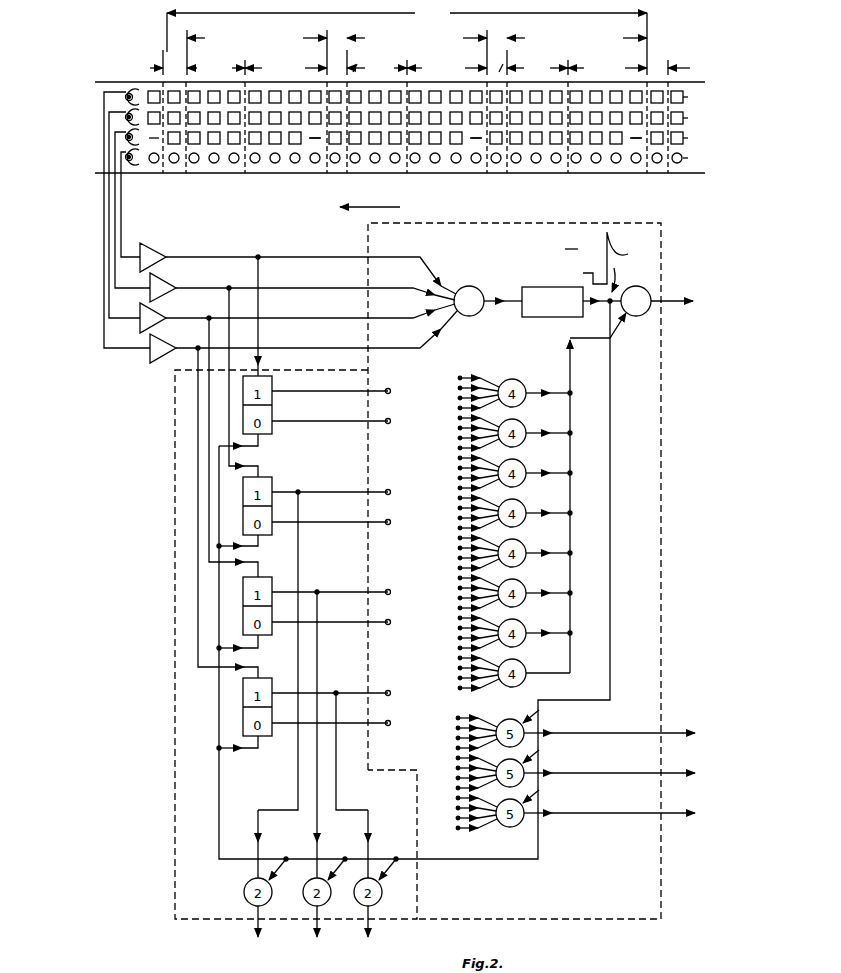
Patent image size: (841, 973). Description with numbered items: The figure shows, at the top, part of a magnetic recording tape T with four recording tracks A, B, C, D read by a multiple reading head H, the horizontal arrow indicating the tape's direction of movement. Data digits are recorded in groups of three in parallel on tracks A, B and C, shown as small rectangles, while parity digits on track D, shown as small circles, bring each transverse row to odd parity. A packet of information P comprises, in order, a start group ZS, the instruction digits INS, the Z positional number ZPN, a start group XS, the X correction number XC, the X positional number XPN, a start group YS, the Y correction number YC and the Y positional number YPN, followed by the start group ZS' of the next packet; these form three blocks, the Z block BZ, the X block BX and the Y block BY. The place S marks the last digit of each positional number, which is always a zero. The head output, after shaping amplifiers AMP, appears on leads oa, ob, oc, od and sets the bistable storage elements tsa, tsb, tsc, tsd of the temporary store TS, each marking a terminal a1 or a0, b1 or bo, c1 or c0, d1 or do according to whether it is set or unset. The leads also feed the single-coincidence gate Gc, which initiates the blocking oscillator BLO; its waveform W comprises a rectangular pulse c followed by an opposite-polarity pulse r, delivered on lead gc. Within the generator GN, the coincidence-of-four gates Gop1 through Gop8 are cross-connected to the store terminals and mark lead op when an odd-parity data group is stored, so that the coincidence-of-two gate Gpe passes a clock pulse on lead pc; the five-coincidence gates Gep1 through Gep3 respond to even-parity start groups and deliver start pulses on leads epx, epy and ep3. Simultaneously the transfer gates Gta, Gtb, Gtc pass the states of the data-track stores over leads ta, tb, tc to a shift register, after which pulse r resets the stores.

The magnetic recording tape T is at (113, 80).
The multiple reading head H is at (133, 80).
The recording track A is at (691, 97).
The recording track B is at (691, 118).
The recording track C is at (691, 138).
The parity track D is at (692, 158).
The last digit place of positional number S is at (316, 142).
The packet of information P is at (407, 41).
The Z block BZ is at (257, 47).
The X block BX is at (417, 47).
The Y block BY is at (577, 47).
The start group ZS is at (167, 61).
The instruction digits INS is at (216, 68).
The Z positional number ZPN is at (286, 68).
The start group XS is at (348, 60).
The X correction number XC is at (377, 68).
The X positional number XPN is at (447, 68).
The start group YS is at (512, 60).
The Y correction number YC is at (537, 68).
The Y positional number YPN is at (607, 68).
The start group of next packet ZS' is at (678, 60).
The shaping amplifiers AMP is at (165, 226).
The output lead od is at (221, 258).
The output lead oc is at (198, 289).
The output lead ob is at (178, 319).
The output lead oa is at (166, 349).
The single-coincidence gate Gc is at (488, 293).
The blocking oscillator BLO is at (566, 302).
The coincidence-of-two gate Gpe is at (629, 292).
The clock signal output connection pc is at (672, 290).
The output waveform W is at (572, 241).
The rectangular pulse c is at (583, 273).
The reset pulse r is at (622, 250).
The lead op is at (585, 334).
The coincidence-of-four gate Gop1 is at (445, 423).
The coincidence-of-four gate Gop8 is at (514, 676).
The five-coincidence gate Gep1 is at (445, 708).
The five-coincidence gate Gep3 is at (504, 824).
The start signal output connection epx is at (626, 724).
The start signal output connection epy is at (626, 764).
The start signal output connection ep3 is at (626, 804).
The output lead of blocking oscillator gc is at (610, 534).
The start signal and clock pulse generator GN is at (661, 509).
The temporary store TS is at (176, 893).
The bistable storage element tsd is at (273, 428).
The bistable storage element tsc is at (273, 529).
The bistable storage element tsb is at (273, 629).
The bistable storage element tsa is at (273, 730).
The output terminal d1 is at (390, 382).
The output terminal do is at (388, 430).
The output terminal c1 is at (327, 641).
The output terminal c0 is at (387, 531).
The output terminal b1 is at (357, 691).
The output terminal bo is at (388, 631).
The output terminal a1 is at (366, 741).
The output terminal a0 is at (388, 732).
The coincidence-of-two gate Gtc is at (246, 885).
The coincidence-of-two gate Gtb is at (306, 903).
The coincidence-of-two gate Gta is at (383, 901).
The lead tc is at (256, 936).
The lead tb is at (314, 936).
The lead ta is at (364, 936).